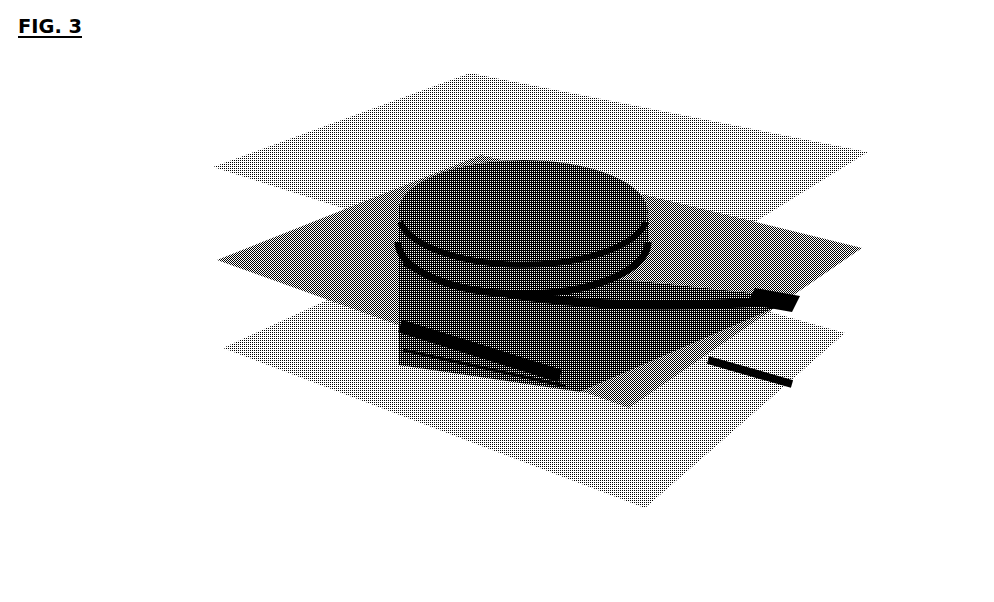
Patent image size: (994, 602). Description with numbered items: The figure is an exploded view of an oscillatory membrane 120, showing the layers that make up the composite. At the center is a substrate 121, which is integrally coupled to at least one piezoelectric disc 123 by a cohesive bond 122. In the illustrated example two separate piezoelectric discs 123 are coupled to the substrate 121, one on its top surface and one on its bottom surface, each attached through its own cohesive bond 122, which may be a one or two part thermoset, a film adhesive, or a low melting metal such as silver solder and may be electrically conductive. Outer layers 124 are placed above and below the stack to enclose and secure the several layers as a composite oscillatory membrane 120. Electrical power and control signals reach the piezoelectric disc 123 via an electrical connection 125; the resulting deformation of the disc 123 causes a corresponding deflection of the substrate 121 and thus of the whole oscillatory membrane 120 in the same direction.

The oscillatory membrane 120 is at (843, 90).
The substrate 121 is at (573, 281).
The cohesive bond 122 is at (405, 255).
The piezoelectric disc 123 is at (400, 225).
The outer layer 124 is at (540, 300).
The electrical connection 125 is at (785, 369).